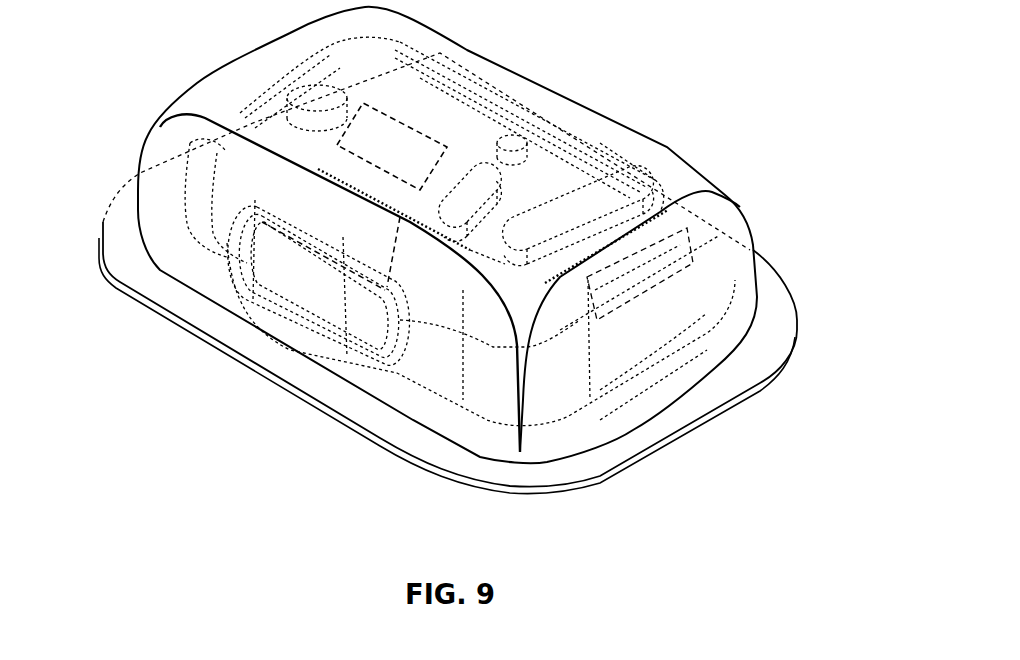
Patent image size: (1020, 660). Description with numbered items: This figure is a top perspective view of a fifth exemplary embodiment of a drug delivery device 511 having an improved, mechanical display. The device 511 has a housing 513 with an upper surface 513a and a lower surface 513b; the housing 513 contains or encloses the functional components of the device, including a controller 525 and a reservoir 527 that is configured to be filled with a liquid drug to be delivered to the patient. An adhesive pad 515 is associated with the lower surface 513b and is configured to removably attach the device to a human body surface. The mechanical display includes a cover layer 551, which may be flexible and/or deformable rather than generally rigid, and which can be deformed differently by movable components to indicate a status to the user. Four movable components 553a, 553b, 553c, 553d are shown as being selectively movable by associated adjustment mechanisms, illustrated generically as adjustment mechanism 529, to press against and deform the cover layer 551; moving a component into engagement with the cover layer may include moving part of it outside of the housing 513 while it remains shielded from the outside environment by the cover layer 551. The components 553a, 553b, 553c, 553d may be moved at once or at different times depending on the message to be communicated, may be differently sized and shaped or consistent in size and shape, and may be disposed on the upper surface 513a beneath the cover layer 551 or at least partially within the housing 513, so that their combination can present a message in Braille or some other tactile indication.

The drug delivery device 511 is at (229, 405).
The housing 513 is at (623, 343).
The upper surface 513a is at (263, 115).
The lower surface 513b is at (600, 400).
The adhesive pad 515 is at (777, 323).
The controller 525 is at (633, 293).
The reservoir 527 is at (230, 157).
The adjustment mechanism 529 is at (410, 127).
The cover layer 551 is at (722, 187).
The movable component 553a is at (315, 90).
The movable component 553b is at (470, 180).
The movable component 553c is at (525, 150).
The movable component 553d is at (625, 190).